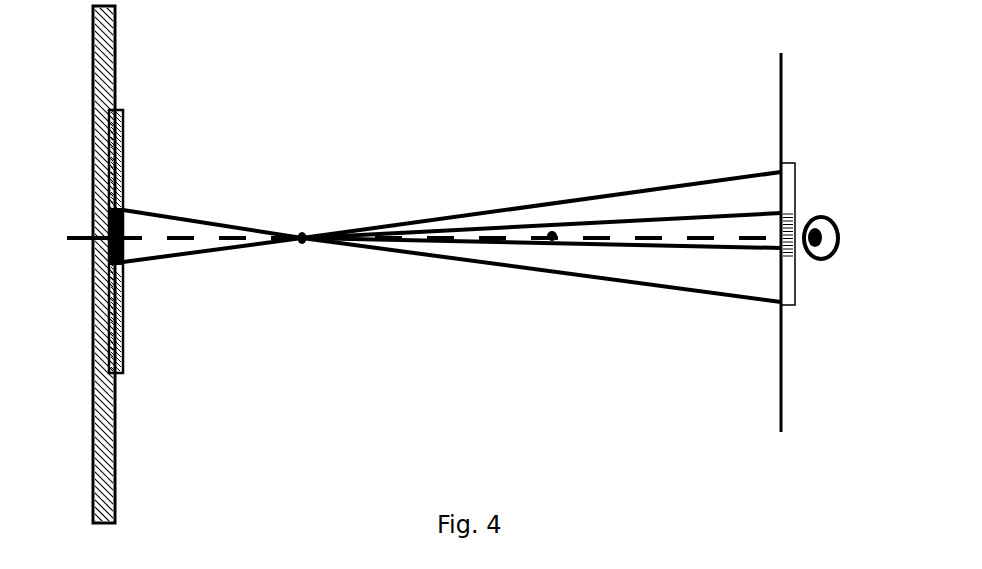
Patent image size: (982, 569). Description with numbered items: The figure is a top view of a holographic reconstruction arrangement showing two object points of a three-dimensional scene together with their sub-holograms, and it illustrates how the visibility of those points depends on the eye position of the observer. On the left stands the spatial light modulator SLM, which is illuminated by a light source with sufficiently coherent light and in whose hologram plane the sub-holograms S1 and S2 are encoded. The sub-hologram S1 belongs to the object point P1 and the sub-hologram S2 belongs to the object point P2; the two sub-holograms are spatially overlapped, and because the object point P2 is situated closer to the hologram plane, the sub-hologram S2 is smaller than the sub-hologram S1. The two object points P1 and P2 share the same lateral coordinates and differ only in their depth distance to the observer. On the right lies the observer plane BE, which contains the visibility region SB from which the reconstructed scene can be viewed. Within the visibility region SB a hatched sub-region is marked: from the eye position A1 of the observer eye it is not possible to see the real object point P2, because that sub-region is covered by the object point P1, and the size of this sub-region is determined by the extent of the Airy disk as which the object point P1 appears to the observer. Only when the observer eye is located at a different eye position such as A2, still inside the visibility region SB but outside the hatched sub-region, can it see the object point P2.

The spatial light modulator SLM is at (122, 439).
The sub-hologram S1 is at (125, 135).
The sub-hologram S2 is at (122, 223).
The object point P2 is at (307, 263).
The object point P1 is at (553, 269).
The eye position A2 is at (777, 171).
The eye position A1 is at (777, 245).
The observer plane BE is at (788, 342).
The visibility region SB is at (797, 287).